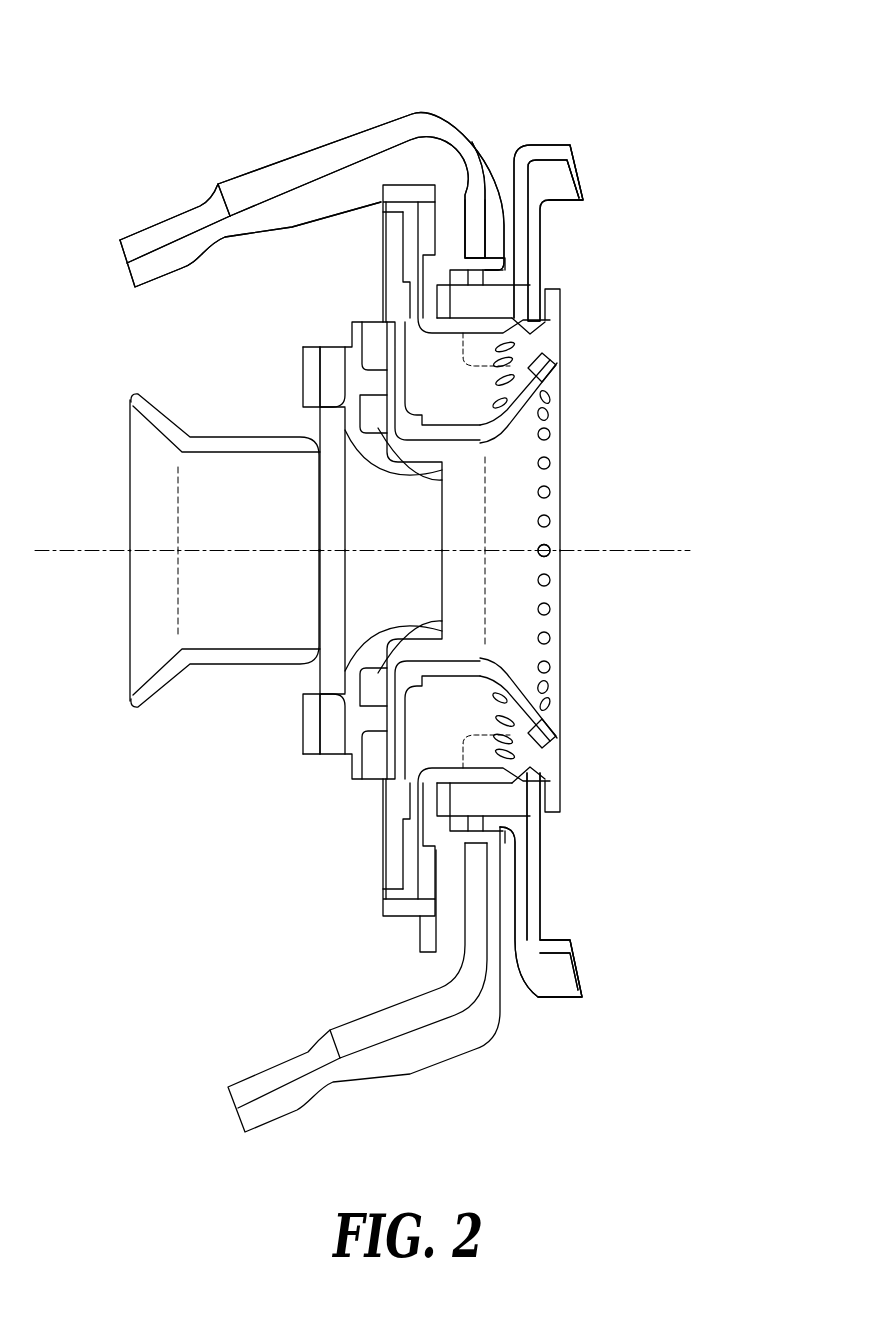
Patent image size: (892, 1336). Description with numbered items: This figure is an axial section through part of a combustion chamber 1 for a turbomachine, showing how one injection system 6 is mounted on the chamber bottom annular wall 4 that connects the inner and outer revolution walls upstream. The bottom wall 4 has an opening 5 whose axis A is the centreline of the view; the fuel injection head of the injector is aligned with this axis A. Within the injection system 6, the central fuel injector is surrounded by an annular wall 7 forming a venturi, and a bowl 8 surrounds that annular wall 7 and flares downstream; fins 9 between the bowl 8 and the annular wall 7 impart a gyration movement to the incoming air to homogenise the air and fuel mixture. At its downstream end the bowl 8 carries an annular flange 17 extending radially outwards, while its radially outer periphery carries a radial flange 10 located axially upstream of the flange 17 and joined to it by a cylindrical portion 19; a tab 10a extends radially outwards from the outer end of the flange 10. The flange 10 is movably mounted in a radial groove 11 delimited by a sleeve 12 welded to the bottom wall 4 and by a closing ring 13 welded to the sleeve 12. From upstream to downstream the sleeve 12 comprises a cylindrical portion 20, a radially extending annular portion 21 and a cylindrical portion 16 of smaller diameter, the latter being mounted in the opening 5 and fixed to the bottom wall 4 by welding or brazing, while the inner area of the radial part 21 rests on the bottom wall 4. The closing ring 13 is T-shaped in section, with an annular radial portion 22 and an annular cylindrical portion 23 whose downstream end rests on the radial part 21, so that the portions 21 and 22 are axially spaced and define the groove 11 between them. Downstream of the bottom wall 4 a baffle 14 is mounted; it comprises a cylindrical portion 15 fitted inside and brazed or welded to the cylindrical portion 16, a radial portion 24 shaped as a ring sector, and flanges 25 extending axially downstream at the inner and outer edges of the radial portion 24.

The combustion chamber 1 is at (484, 66).
The chamber bottom annular wall 4 is at (465, 1023).
The opening 5 is at (473, 847).
The injection system 6 is at (347, 357).
The annular wall 7 is at (408, 478).
The bowl 8 is at (543, 415).
The fins 9 is at (373, 330).
The radial flange 10 is at (395, 270).
The tab 10a is at (428, 937).
The radial groove 11 is at (443, 215).
The sleeve 12 is at (423, 202).
The closing ring 13 is at (415, 195).
The baffle 14 is at (548, 202).
The cylindrical portion 15 is at (493, 285).
The cylindrical portion 16 is at (493, 263).
The annular flange 17 is at (553, 290).
The cylindrical portion 19 is at (505, 362).
The cylindrical portion 20 is at (367, 197).
The radially extending annular portion 21 is at (447, 208).
The annular radial portion 22 is at (395, 238).
The annular cylindrical portion 23 is at (312, 200).
The radial portion 24 is at (541, 571).
The flanges 25 is at (555, 140).
The axis A is at (650, 551).